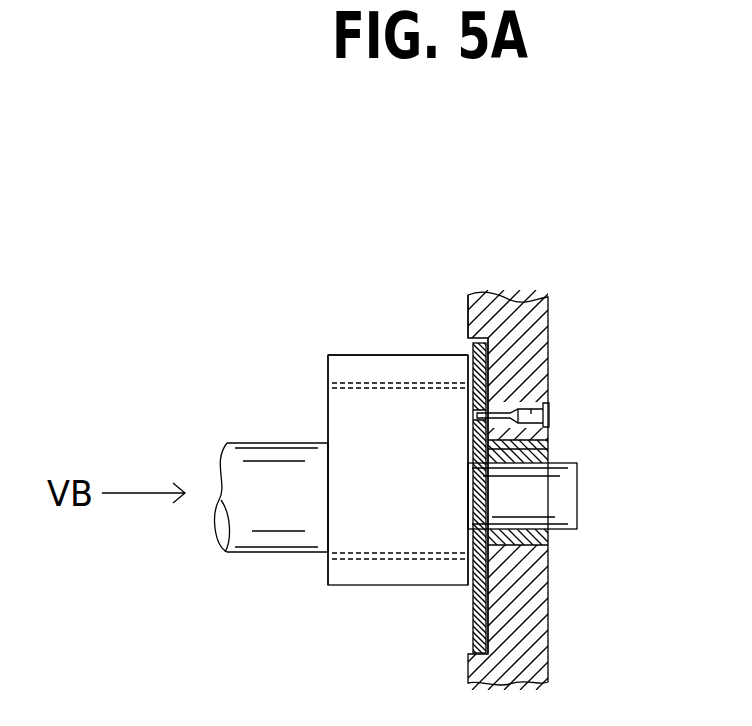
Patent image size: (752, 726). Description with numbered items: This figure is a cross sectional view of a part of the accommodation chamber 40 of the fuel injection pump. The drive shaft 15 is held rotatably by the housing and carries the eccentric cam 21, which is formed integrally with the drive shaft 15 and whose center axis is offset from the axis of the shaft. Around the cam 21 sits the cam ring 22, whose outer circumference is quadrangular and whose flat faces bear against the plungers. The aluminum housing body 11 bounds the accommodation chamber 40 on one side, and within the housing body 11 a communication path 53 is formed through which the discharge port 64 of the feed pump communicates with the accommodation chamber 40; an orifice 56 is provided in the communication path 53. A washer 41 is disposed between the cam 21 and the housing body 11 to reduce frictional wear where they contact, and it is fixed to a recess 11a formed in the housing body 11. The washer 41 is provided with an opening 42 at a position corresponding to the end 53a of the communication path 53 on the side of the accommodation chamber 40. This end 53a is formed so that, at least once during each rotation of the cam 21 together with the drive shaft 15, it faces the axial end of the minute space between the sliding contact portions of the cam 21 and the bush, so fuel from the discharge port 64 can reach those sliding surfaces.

The housing body 11 is at (520, 310).
The recess 11a is at (488, 625).
The drive shaft 15 is at (272, 443).
The cam 21 is at (347, 415).
The cam ring 22 is at (328, 368).
The accommodation chamber 40 is at (367, 312).
The washer 41 is at (476, 637).
The opening 42 is at (466, 408).
The communication path 53 is at (545, 402).
The end of communication path 53a is at (470, 416).
The orifice 56 is at (515, 407).
The discharge port 64 is at (550, 410).